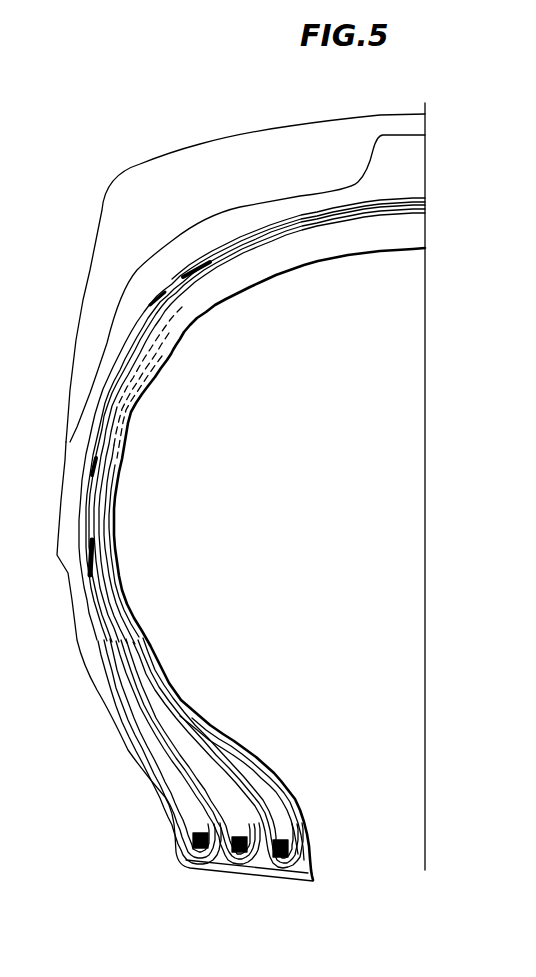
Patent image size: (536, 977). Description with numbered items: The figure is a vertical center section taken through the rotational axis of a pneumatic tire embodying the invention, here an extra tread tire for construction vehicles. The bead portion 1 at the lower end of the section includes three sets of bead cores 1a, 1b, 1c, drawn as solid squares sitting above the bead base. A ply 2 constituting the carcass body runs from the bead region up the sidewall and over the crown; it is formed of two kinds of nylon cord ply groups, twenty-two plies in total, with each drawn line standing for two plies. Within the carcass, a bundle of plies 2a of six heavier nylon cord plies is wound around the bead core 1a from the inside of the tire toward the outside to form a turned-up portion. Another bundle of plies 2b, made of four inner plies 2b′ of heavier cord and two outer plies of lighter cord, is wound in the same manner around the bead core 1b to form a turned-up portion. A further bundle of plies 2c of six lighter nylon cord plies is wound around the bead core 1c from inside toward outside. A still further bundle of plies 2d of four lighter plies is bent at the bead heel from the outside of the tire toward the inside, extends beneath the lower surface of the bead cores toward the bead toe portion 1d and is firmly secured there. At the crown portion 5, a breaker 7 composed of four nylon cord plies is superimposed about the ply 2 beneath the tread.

The bead portion 1 is at (191, 885).
The bead core 1a is at (302, 880).
The bead core 1b is at (233, 868).
The bead core 1c is at (179, 855).
The bead toe portion 1d is at (307, 867).
The ply 2 is at (90, 568).
The bundle of plies 2a is at (280, 803).
The bundle of plies 2b is at (228, 745).
The inner plies 2b′ is at (250, 866).
The bundle of plies 2c is at (204, 870).
The bundle of plies 2d is at (121, 712).
The crown portion 5 is at (343, 130).
The breaker 7 is at (399, 201).